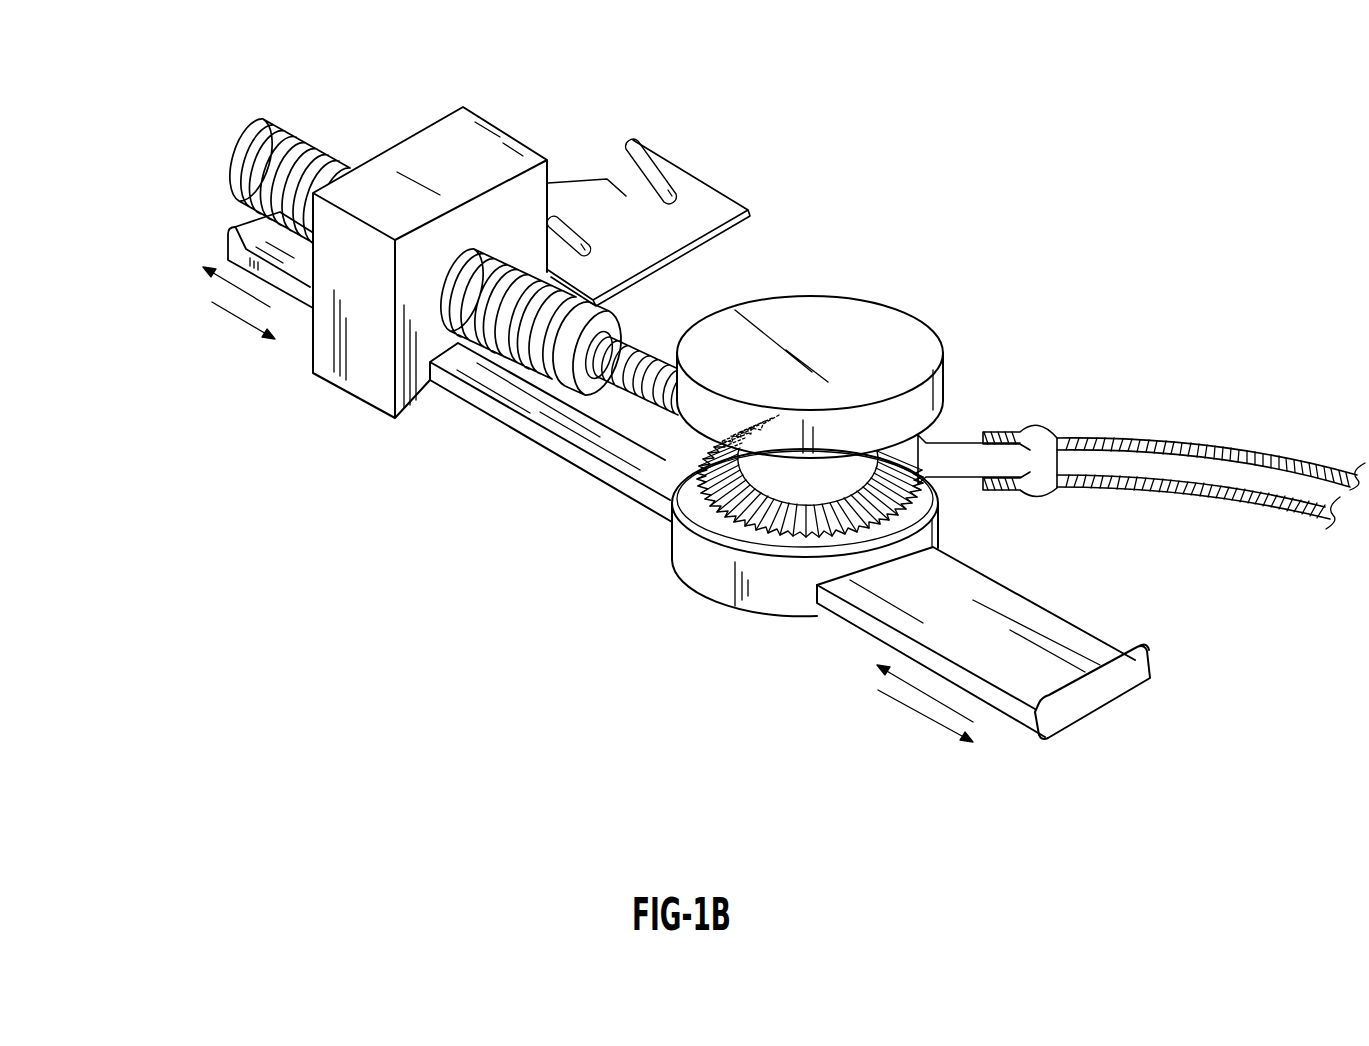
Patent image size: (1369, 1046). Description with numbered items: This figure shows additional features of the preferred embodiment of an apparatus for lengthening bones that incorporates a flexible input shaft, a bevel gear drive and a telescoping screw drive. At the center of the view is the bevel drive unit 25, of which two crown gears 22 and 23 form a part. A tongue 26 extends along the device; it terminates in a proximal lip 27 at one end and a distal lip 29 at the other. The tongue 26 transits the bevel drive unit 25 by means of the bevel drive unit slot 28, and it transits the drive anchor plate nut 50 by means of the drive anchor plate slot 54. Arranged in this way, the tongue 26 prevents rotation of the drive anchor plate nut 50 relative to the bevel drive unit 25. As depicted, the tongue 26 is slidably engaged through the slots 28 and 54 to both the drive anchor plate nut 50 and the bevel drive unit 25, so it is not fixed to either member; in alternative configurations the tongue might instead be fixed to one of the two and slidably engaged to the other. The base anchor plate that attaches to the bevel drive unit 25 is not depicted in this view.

The crown gear 22 is at (720, 515).
The crown gear 23 is at (943, 397).
The bevel drive unit 25 is at (700, 572).
The tongue 26 is at (1060, 618).
The proximal lip 27 is at (1107, 693).
The bevel drive unit slot 28 is at (815, 604).
The distal lip 29 is at (228, 242).
The drive anchor plate nut 50 is at (505, 133).
The drive anchor plate slot 54 is at (430, 378).